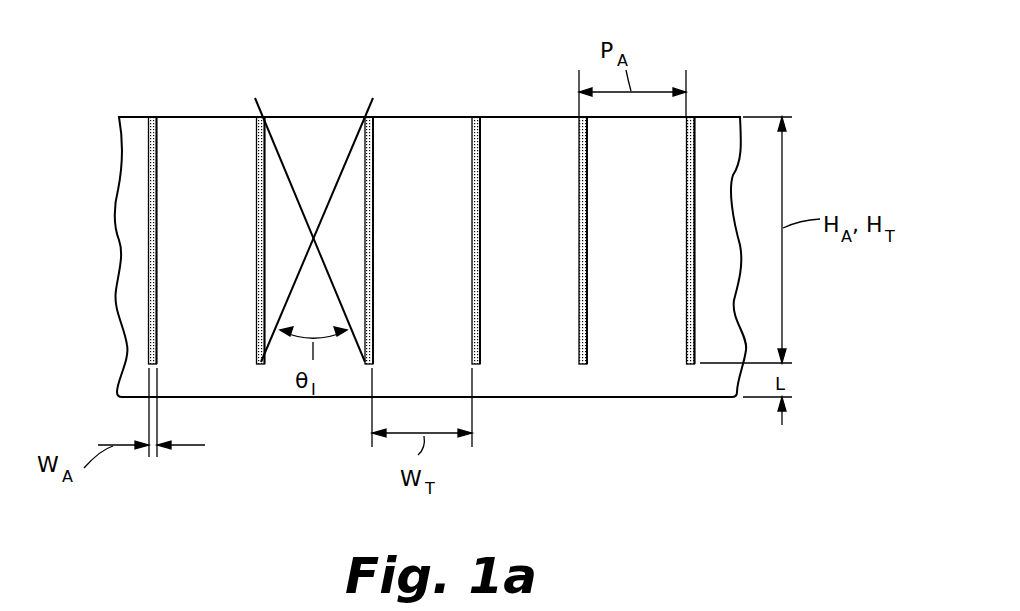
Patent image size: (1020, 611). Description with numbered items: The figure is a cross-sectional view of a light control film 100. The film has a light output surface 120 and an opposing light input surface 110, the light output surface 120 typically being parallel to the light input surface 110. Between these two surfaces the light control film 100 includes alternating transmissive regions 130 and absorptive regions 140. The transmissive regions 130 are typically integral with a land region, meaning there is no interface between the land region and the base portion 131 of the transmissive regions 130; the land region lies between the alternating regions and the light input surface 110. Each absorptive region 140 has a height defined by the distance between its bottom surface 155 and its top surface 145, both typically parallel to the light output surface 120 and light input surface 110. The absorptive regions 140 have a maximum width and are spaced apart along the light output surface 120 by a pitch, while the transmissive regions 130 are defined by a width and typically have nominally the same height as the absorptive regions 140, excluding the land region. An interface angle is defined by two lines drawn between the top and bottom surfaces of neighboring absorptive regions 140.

The light control film 100 is at (756, 70).
The light input surface 110 is at (282, 397).
The light output surface 120 is at (318, 117).
The transmissive regions 130 is at (172, 194).
The absorptive regions 140 is at (152, 249).
The top surface 145 is at (187, 117).
The bottom surface 155 is at (583, 366).
The base portion 131 is at (760, 368).